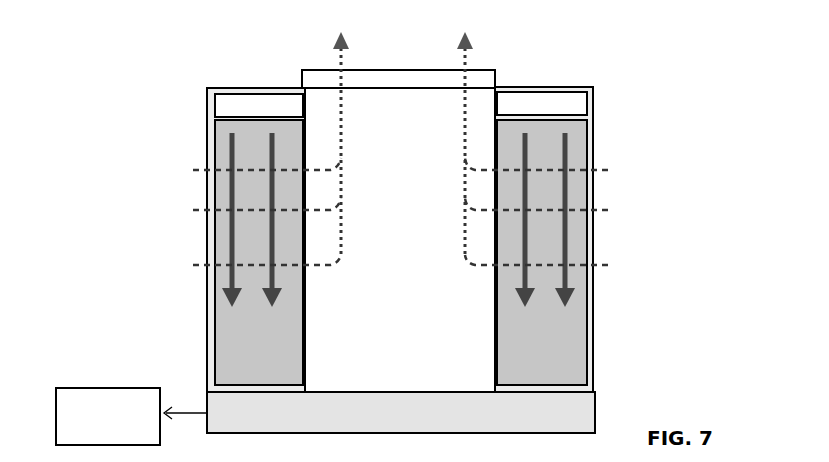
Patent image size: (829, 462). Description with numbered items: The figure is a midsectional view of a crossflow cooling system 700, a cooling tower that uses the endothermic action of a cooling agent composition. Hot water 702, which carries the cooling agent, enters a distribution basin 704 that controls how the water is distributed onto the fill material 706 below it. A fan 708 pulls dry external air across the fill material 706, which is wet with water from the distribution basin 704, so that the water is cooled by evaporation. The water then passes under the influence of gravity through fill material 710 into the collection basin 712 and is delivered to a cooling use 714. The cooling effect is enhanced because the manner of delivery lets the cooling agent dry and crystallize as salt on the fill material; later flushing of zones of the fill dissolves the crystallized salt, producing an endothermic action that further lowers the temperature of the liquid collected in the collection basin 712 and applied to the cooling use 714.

The crossflow cooling system 700 is at (180, 38).
The hot water 702 is at (238, 90).
The distribution basin 704 is at (580, 95).
The fill material 706 is at (217, 237).
The fan 708 is at (317, 70).
The fill material 710 is at (205, 151).
The collection basin 712 is at (578, 415).
The cooling use 714 is at (97, 388).